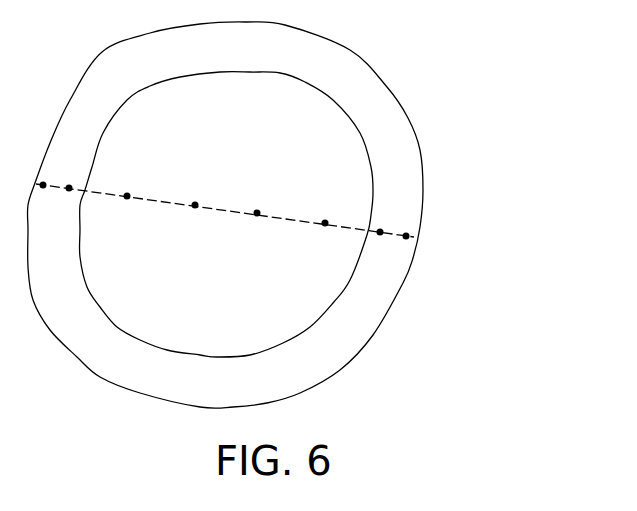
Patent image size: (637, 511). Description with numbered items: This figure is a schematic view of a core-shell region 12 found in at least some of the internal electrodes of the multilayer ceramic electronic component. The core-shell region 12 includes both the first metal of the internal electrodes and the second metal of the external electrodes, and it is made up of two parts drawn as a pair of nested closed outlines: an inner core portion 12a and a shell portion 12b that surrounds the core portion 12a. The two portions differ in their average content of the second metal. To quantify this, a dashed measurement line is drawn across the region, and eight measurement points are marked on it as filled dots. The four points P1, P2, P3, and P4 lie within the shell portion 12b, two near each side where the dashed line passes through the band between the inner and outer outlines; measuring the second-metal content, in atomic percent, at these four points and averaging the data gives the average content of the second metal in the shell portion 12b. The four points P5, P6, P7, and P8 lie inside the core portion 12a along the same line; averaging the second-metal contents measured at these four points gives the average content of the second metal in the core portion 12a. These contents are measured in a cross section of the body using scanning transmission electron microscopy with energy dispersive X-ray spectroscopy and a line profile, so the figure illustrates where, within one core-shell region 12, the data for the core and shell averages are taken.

The core-shell region 12 is at (277, 215).
The core portion 12a is at (323, 172).
The shell portion 12b is at (410, 189).
The measurement point P1 is at (42, 197).
The measurement point P2 is at (71, 177).
The measurement point P3 is at (380, 244).
The measurement point P4 is at (407, 226).
The measurement point P5 is at (127, 208).
The measurement point P6 is at (195, 217).
The measurement point P7 is at (257, 226).
The measurement point P8 is at (326, 237).